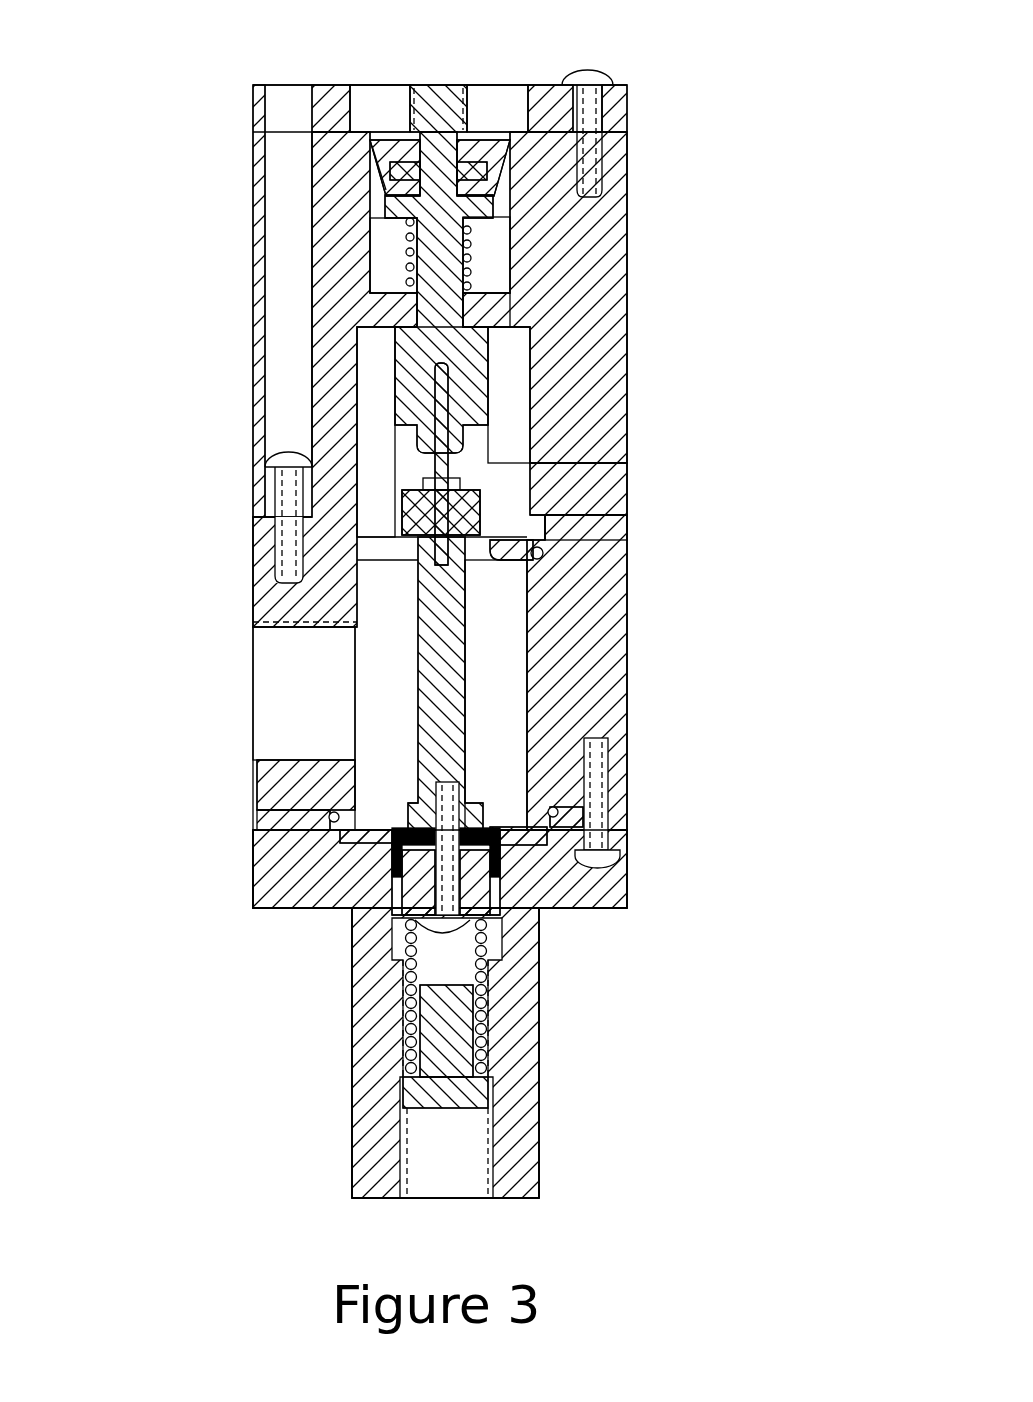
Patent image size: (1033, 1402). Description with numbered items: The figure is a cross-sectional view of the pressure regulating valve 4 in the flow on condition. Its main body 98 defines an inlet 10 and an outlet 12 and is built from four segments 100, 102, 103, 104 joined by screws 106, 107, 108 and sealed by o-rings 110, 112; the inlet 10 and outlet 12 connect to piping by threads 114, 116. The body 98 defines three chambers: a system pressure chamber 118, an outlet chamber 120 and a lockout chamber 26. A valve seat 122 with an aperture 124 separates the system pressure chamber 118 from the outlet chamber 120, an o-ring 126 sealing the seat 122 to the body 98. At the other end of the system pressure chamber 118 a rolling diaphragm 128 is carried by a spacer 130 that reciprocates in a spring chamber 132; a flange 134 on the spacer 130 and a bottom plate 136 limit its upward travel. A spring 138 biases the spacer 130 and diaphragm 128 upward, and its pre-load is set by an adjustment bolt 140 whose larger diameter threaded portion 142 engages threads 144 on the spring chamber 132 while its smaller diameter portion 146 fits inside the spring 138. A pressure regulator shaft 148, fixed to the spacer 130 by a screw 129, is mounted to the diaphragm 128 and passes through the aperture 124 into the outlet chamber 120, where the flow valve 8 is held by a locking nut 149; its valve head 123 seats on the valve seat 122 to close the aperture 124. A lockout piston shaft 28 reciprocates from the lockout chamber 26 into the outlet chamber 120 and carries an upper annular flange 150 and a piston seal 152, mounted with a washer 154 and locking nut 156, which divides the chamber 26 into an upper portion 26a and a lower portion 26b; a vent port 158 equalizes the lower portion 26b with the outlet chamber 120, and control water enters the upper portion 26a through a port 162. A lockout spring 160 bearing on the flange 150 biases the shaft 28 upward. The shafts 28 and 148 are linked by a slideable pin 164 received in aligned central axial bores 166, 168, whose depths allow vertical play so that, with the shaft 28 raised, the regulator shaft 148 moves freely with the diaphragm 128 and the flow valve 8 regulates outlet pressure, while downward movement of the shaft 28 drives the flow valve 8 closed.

The pressure regulating valve 4 is at (660, 786).
The flow valve 8 is at (400, 532).
The inlet 10 is at (296, 703).
The outlet 12 is at (573, 397).
The lockout chamber 26 is at (485, 245).
The upper portion of lockout chamber 26a is at (360, 133).
The lower portion of lockout chamber 26b is at (395, 251).
The lockout piston shaft 28 is at (450, 340).
The main body 98 is at (242, 323).
The body segment 100 is at (377, 1117).
The body segment 102 is at (573, 615).
The body segment 103 is at (570, 270).
The body segment 104 is at (615, 107).
The screw 106 is at (597, 760).
The screw 107 is at (625, 90).
The screw 108 is at (268, 468).
The o-ring 110 is at (333, 817).
The o-ring 112 is at (540, 520).
The threads 114 is at (330, 768).
The threads 116 is at (530, 468).
The system pressure chamber 118 is at (498, 632).
The outlet chamber 120 is at (505, 380).
The valve seat 122 is at (358, 563).
The valve head 123 is at (392, 545).
The aperture 124 is at (412, 640).
The o-ring 126 is at (543, 553).
The rolling diaphragm 128 is at (405, 880).
The screw 129 is at (443, 813).
The spacer 130 is at (505, 885).
The spring chamber 132 is at (440, 957).
The flange 134 is at (500, 910).
The bottom plate 136 is at (258, 893).
The spring 138 is at (487, 965).
The adjustment bolt 140 is at (440, 1050).
The larger diameter threaded portion 142 is at (493, 1085).
The threads 144 is at (493, 1150).
The smaller diameter portion 146 is at (407, 1032).
The pressure regulator shaft 148 is at (443, 632).
The locking nut 149 is at (405, 495).
The upper annular flange 150 is at (510, 185).
The piston seal 152 is at (405, 184).
The washer 154 is at (385, 168).
The locking nut 156 is at (384, 150).
The vent port 158 is at (500, 310).
The lockout spring 160 is at (405, 271).
The port 162 is at (500, 105).
The slideable pin 164 is at (455, 483).
The central axial bore 166 is at (410, 375).
The central axial bore 168 is at (455, 560).